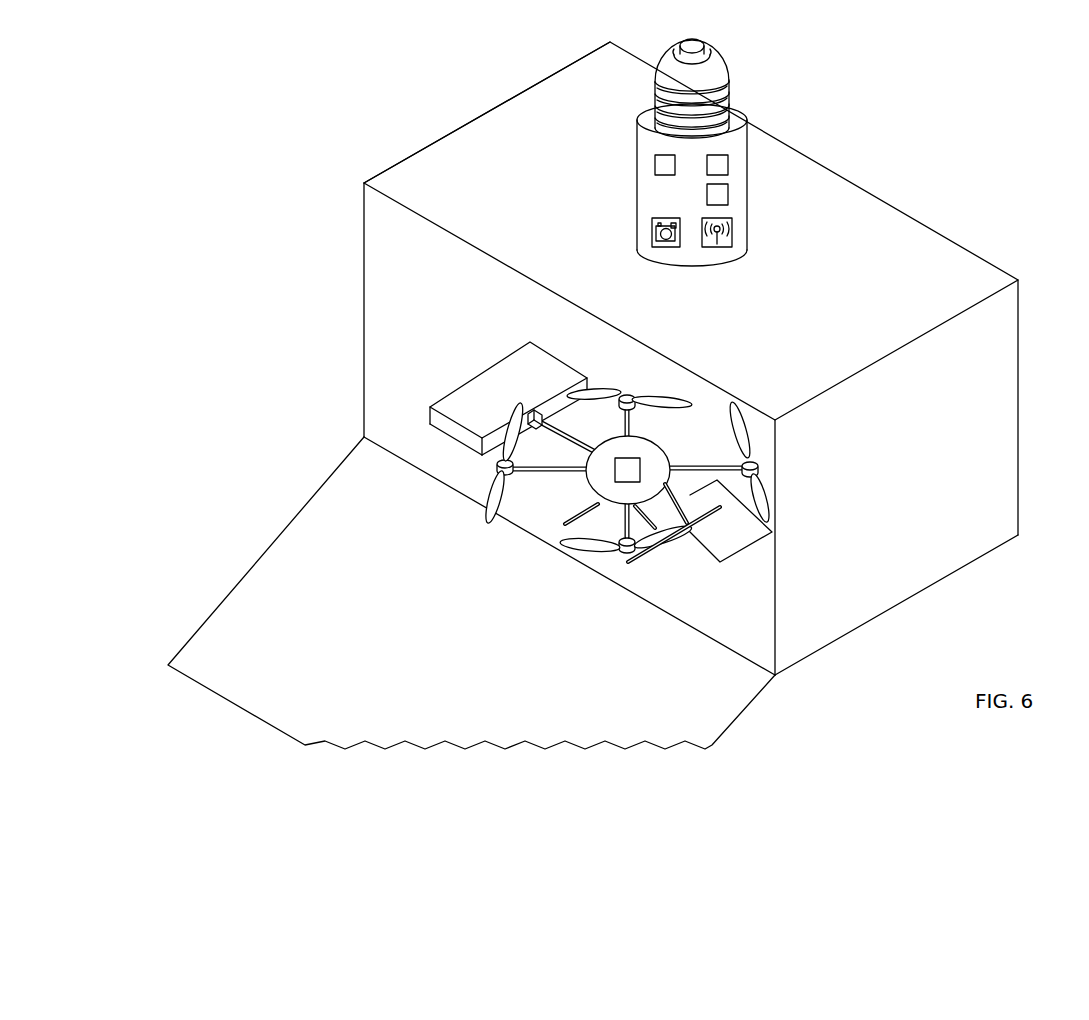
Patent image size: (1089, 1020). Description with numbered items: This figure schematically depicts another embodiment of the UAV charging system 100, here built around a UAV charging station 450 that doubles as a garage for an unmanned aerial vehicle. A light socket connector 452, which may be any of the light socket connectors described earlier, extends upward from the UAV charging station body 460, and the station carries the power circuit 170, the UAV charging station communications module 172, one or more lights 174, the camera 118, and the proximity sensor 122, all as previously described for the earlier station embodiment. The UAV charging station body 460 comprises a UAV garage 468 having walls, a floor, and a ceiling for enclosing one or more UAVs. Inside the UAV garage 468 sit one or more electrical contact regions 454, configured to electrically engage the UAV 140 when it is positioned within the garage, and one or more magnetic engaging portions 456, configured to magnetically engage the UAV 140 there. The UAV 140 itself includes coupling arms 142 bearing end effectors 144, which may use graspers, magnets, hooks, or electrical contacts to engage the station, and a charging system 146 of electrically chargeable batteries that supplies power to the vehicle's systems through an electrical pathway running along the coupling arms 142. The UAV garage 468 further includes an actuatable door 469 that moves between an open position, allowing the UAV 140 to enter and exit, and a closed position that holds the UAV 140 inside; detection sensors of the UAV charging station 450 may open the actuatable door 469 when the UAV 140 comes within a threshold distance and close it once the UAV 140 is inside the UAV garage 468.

The UAV charging system 100 is at (328, 122).
The UAV charging station 450 is at (495, 88).
The UAV charging station body 460 is at (436, 97).
The UAV garage 468 is at (405, 173).
The actuatable door 469 is at (720, 715).
The light socket connector 452 is at (733, 79).
The power circuit 170 is at (655, 165).
The UAV charging station communications module 172 is at (728, 165).
The lights 174 is at (728, 194).
The camera 118 is at (652, 232).
The proximity sensor 122 is at (732, 232).
The electrical contact regions 454 is at (463, 438).
The magnetic engaging portions 456 is at (737, 553).
The UAV 140 is at (544, 522).
The coupling arms 142 is at (579, 437).
The end effectors 144 is at (533, 410).
The charging system 146 is at (645, 466).